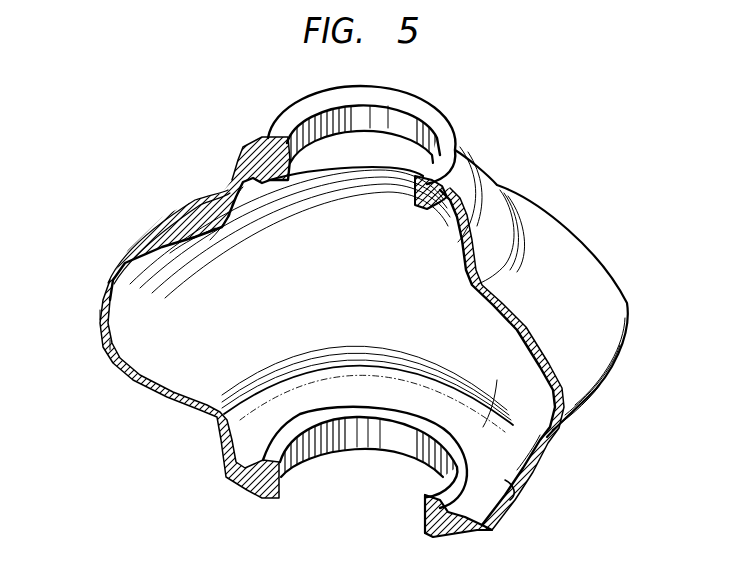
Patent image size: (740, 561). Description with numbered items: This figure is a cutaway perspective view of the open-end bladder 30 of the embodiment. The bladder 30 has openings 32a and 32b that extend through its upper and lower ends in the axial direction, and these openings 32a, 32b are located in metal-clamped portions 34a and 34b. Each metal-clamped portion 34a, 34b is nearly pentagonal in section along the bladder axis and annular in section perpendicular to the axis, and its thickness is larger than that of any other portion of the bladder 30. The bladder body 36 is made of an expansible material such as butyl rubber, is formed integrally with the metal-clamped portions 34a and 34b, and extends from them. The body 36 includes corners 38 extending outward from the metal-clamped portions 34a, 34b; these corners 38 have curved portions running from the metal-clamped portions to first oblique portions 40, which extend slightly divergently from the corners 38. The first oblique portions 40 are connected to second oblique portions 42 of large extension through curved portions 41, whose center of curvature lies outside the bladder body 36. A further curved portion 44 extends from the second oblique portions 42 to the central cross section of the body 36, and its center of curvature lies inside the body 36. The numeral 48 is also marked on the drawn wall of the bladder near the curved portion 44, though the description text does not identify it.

The open-end bladder 30 is at (540, 204).
The opening 32a is at (398, 122).
The opening 32b is at (333, 448).
The metal-clamped portion 34a is at (272, 172).
The metal-clamped portion 34b is at (423, 523).
The bladder body 36 is at (135, 244).
The corner 38 is at (235, 167).
The first oblique portion 40 is at (237, 195).
The curved portion 41 is at (210, 242).
The second oblique portion 42 is at (170, 256).
The curved portion 44 is at (117, 363).
The outer rim 48 is at (100, 320).